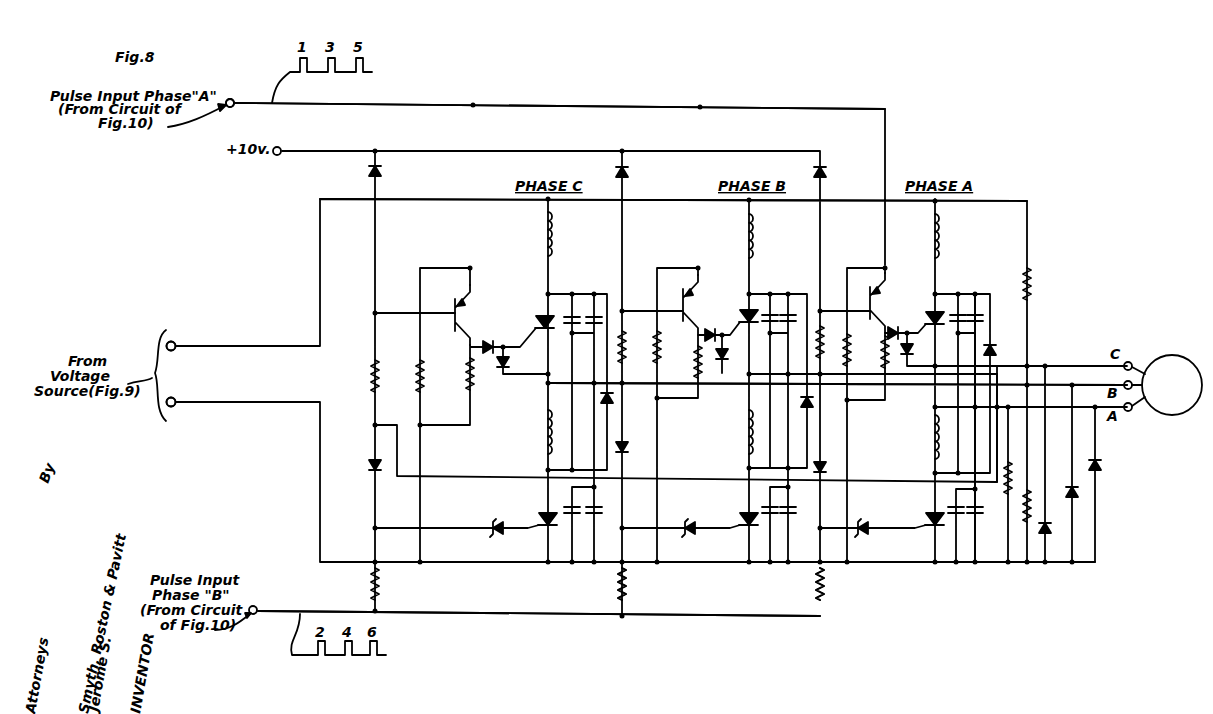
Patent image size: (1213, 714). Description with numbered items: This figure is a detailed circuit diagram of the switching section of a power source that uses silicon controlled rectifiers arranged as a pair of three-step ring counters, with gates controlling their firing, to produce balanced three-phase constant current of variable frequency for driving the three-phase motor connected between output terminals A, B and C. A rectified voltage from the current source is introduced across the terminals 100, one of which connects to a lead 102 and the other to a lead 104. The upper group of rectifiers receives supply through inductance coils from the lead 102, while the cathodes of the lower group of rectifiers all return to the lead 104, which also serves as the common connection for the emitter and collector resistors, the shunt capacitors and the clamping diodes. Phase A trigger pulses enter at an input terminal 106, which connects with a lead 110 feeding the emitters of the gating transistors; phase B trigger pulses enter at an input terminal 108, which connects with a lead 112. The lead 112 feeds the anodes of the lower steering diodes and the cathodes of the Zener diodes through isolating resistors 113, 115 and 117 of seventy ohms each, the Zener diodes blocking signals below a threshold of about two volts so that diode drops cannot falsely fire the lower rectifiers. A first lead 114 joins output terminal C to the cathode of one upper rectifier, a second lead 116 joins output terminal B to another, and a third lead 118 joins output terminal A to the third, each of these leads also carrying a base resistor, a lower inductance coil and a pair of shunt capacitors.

The terminals 100 is at (176, 400).
The lead 102 is at (405, 199).
The lead 104 is at (630, 580).
The input terminal 106 is at (236, 108).
The input terminal 108 is at (258, 608).
The lead 110 is at (583, 106).
The lead 112 is at (623, 617).
The isolating resistor 113 is at (816, 586).
The first lead 114 is at (978, 362).
The isolating resistor 115 is at (616, 586).
The second lead 116 is at (978, 386).
The isolating resistor 117 is at (368, 583).
The third lead 118 is at (397, 428).